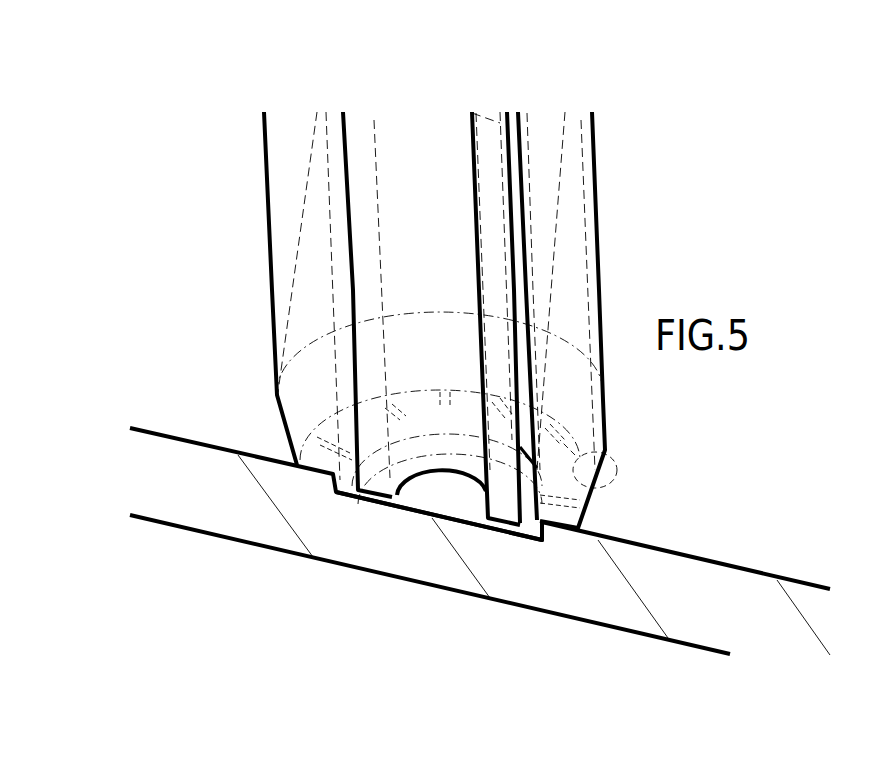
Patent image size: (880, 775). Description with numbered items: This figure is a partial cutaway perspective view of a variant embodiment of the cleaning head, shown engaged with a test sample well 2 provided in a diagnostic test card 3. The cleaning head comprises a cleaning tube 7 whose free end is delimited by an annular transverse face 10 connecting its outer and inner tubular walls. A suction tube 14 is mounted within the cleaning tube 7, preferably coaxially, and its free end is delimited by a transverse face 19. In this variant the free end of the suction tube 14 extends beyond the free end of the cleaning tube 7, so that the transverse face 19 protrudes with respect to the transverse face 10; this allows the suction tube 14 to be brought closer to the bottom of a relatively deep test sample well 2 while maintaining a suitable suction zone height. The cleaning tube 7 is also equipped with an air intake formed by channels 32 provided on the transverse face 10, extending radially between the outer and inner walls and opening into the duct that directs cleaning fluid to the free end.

The test sample well 2 is at (410, 498).
The diagnostic test card 3 is at (182, 459).
The cleaning tube 7 is at (572, 186).
The transverse face 10 is at (538, 531).
The suction tube 14 is at (497, 164).
The transverse face 19 is at (453, 476).
The channels 32 is at (610, 484).